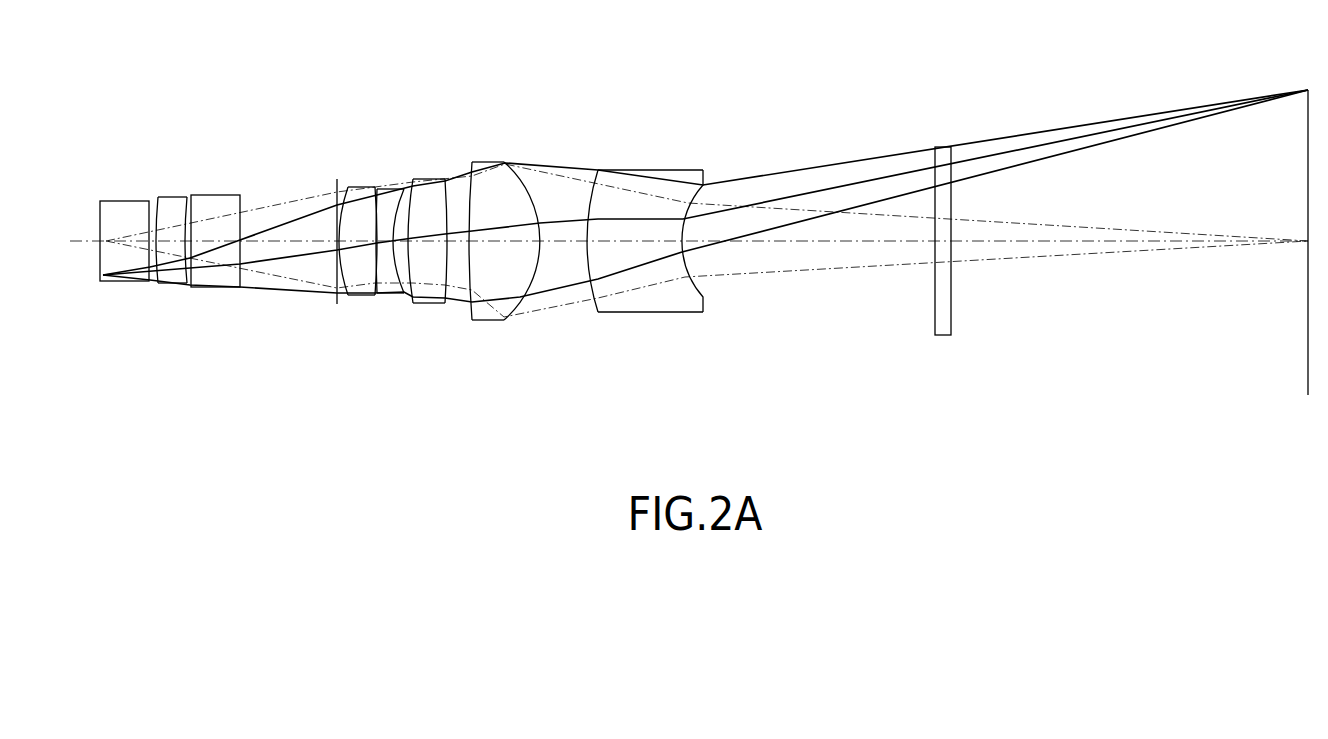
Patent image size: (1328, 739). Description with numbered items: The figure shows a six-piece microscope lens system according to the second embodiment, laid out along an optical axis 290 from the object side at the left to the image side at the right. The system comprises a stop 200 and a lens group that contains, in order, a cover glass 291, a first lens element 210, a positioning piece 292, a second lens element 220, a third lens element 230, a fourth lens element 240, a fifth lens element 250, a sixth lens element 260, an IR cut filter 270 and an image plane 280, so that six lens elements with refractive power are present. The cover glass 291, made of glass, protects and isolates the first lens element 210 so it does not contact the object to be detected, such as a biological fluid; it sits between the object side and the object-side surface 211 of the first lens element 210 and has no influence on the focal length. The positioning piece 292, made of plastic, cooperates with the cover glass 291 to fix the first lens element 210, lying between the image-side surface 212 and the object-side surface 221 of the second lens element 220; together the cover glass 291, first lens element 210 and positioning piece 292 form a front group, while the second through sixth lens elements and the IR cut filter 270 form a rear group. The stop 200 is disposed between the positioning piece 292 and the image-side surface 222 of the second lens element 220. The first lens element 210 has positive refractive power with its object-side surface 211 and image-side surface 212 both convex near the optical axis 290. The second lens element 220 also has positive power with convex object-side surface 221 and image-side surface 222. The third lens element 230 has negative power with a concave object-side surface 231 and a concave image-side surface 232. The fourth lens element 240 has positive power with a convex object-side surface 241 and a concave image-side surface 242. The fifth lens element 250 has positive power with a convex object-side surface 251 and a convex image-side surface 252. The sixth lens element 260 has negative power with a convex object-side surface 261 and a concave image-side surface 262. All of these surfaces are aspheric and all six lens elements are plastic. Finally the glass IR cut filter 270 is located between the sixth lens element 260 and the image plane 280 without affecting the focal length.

The stop 200 is at (332, 178).
The first lens element 210 is at (170, 236).
The object-side surface of the first lens element 211 is at (153, 284).
The image-side surface of the first lens element 212 is at (191, 288).
The second lens element 220 is at (325, 229).
The object-side surface of the second lens element 221 is at (345, 296).
The image-side surface of the second lens element 222 is at (371, 297).
The third lens element 230 is at (382, 263).
The object-side surface of the third lens element 231 is at (378, 295).
The image-side surface of the third lens element 232 is at (402, 295).
The fourth lens element 240 is at (432, 248).
The object-side surface of the fourth lens element 241 is at (414, 305).
The image-side surface of the fourth lens element 242 is at (445, 305).
The fifth lens element 250 is at (499, 233).
The object-side surface of the fifth lens element 251 is at (471, 320).
The image-side surface of the fifth lens element 252 is at (519, 302).
The sixth lens element 260 is at (665, 232).
The object-side surface of the sixth lens element 261 is at (598, 314).
The image-side surface of the sixth lens element 262 is at (701, 290).
The IR cut filter 270 is at (939, 143).
The image plane 280 is at (1300, 88).
The optical axis 290 is at (79, 248).
The cover glass 291 is at (113, 197).
The positioning piece 292 is at (226, 191).